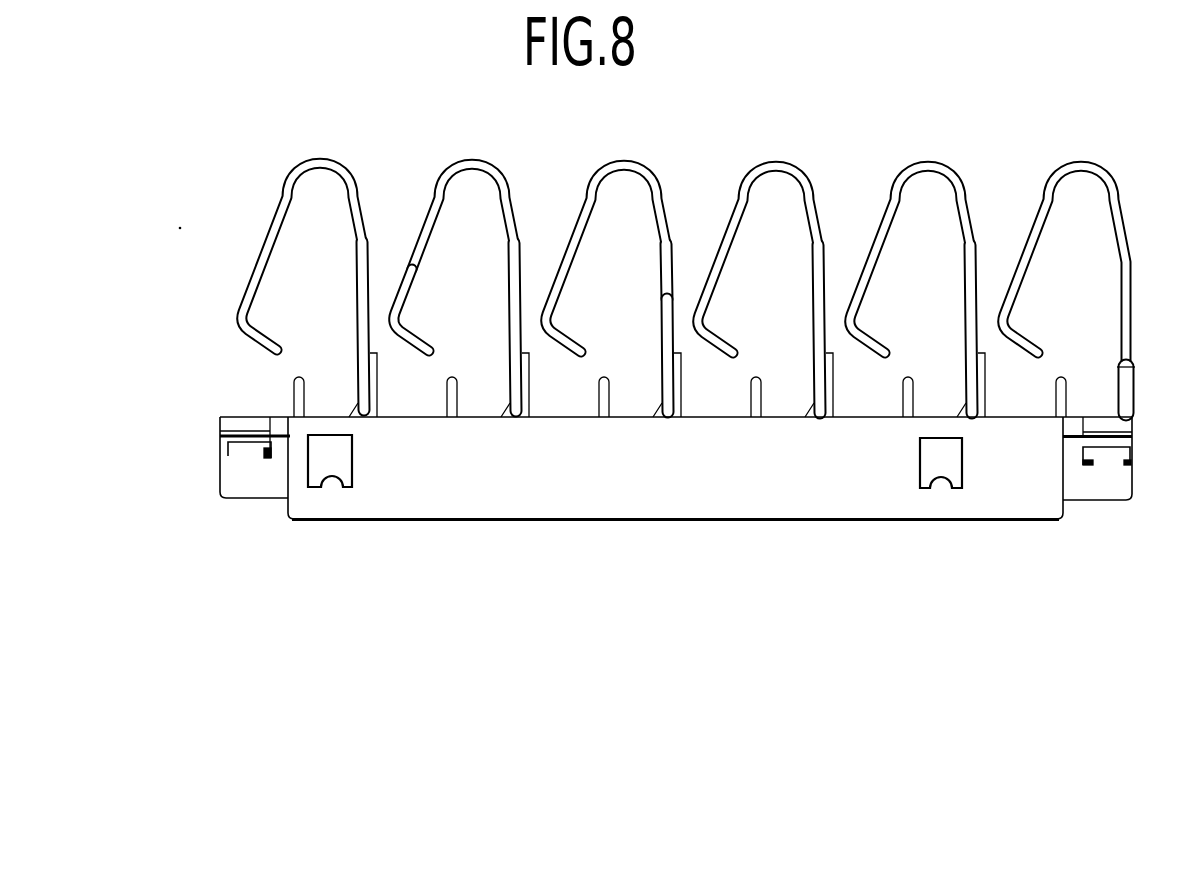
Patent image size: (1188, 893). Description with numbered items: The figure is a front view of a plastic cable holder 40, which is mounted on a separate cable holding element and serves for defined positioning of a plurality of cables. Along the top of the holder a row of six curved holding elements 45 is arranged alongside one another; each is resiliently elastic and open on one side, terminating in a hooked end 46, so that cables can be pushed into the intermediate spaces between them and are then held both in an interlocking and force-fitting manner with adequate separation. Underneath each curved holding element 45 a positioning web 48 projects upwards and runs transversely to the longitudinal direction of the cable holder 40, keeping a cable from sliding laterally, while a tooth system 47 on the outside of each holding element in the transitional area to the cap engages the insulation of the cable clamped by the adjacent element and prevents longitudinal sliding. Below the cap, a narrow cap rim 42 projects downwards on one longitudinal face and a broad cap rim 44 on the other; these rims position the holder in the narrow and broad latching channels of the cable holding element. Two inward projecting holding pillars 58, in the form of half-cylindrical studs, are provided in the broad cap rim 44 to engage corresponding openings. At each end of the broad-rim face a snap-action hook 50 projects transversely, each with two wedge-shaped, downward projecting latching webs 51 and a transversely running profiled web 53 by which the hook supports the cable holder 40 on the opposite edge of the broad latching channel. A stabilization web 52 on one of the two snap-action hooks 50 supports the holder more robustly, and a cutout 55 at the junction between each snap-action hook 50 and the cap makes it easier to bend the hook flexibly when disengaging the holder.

The cable holder 40 is at (376, 163).
The narrow cap rim 42 is at (270, 477).
The broad cap rim 44 is at (572, 476).
The curved holding element 45 is at (477, 163).
The hooked end 46 is at (430, 344).
The tooth system 47 is at (692, 375).
The positioning web 48 is at (601, 394).
The snap-action hook 50 is at (238, 416).
The latching web 51 is at (262, 449).
The stabilization web 52 is at (1128, 398).
The profiled web 53 is at (242, 436).
The cutout 55 is at (280, 421).
The holding pillar 58 is at (327, 484).